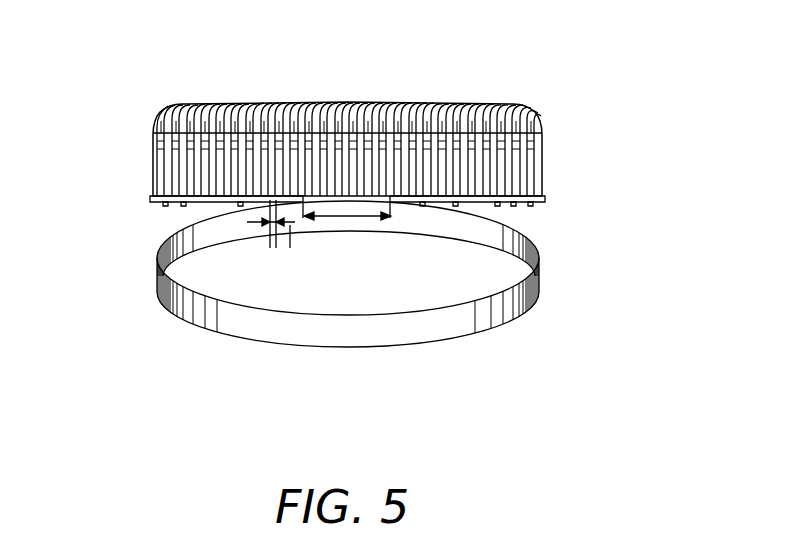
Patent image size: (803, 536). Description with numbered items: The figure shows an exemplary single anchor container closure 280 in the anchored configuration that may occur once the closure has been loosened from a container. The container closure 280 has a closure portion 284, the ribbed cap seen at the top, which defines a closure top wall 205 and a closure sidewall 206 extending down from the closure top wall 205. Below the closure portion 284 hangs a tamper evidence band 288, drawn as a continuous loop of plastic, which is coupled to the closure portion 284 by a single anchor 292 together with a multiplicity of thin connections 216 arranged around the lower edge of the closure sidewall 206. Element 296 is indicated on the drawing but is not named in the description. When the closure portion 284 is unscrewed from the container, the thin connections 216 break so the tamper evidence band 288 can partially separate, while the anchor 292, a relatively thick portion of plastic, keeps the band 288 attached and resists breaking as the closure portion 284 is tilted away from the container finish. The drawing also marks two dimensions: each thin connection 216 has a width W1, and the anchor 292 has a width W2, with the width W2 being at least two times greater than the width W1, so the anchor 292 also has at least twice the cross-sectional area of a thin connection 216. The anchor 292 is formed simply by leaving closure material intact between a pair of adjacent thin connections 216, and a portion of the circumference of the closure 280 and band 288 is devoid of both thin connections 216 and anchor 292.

The single anchor container closure 280 is at (546, 86).
The closure portion 284 is at (167, 108).
The closure top wall 205 is at (327, 107).
The closure sidewall 206 is at (158, 180).
The ribs 296 is at (252, 107).
The anchor 292 is at (340, 204).
The thin connections 216 is at (167, 206).
The tamper evidence band 288 is at (364, 336).
The width of the thin connections W1 is at (279, 247).
The width of the anchor W2 is at (377, 218).